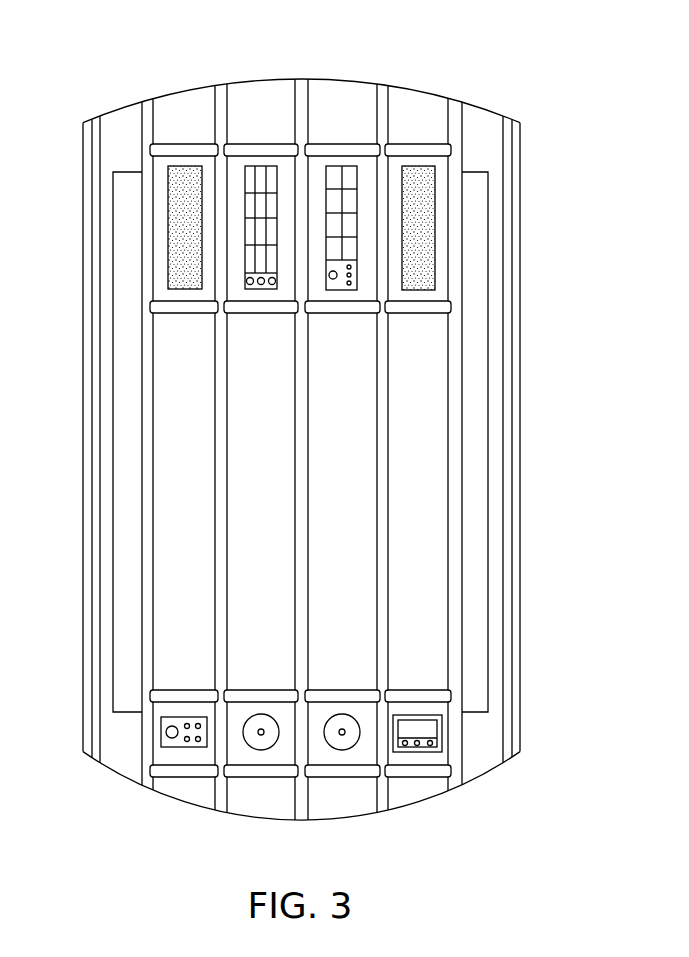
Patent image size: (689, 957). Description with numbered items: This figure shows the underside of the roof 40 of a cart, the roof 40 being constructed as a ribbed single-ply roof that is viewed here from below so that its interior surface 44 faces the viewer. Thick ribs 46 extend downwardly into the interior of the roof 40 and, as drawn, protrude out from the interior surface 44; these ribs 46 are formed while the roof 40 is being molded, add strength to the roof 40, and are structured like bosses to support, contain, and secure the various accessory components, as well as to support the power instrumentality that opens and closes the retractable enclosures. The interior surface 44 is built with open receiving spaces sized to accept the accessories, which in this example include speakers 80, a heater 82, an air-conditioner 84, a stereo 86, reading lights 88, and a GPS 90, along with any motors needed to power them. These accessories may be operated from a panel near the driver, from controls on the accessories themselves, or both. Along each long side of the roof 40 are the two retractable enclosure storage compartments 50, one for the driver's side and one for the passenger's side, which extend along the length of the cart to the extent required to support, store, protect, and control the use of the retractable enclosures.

The roof 40 is at (104, 61).
The interior surface 44 is at (473, 133).
The thick ribs 46 is at (390, 107).
The retractable enclosure storage compartments 50 is at (135, 322).
The speakers 80 is at (185, 166).
The heater 82 is at (262, 166).
The air-conditioner 84 is at (345, 166).
The stereo 86 is at (186, 748).
The reading lights 88 is at (261, 750).
The GPS 90 is at (417, 752).